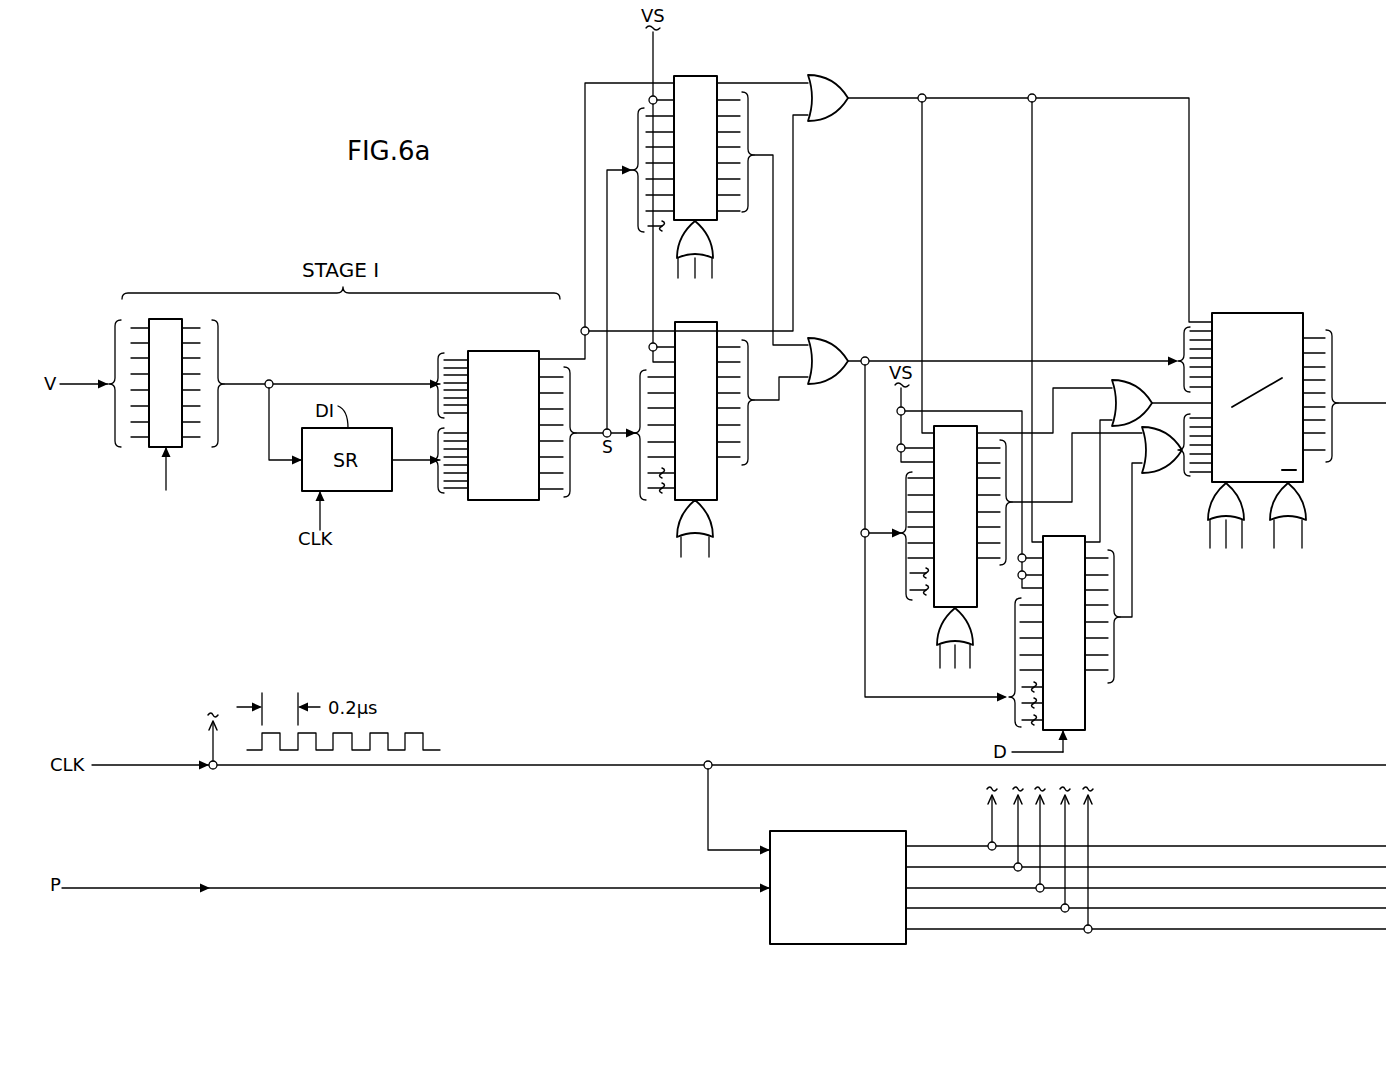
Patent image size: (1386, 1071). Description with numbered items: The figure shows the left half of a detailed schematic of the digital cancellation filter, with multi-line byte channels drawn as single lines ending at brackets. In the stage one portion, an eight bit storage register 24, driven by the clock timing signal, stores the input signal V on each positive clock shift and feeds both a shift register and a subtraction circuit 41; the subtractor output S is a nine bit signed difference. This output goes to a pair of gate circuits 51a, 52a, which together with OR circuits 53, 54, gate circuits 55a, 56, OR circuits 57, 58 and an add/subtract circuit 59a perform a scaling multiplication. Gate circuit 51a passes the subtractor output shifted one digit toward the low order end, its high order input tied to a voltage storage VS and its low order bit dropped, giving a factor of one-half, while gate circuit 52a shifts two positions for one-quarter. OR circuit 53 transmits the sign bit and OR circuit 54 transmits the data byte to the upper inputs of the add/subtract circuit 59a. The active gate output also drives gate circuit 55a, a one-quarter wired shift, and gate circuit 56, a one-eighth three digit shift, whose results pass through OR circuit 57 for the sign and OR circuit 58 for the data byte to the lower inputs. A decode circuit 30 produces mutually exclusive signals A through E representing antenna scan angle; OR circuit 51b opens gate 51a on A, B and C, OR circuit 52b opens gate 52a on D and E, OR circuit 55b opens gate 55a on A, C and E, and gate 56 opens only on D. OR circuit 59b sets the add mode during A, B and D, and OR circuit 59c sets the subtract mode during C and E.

The storage register 24 is at (168, 319).
The subtraction circuit 41 is at (505, 351).
The gate circuit 51a is at (705, 76).
The OR circuit 51b is at (712, 237).
The gate circuit 52a is at (717, 497).
The OR circuit 52b is at (678, 522).
The OR circuit 53 is at (826, 78).
The OR circuit 54 is at (828, 343).
The gate circuit 55a is at (952, 426).
The OR circuit 55b is at (938, 630).
The gate circuit 56 is at (1052, 536).
The OR circuit 57 is at (1128, 392).
The OR circuit 58 is at (1168, 470).
The add/subtract circuit 59a is at (1262, 313).
The OR circuit 59b is at (1206, 509).
The OR circuit 59c is at (1308, 507).
The decode circuit 30 is at (826, 831).